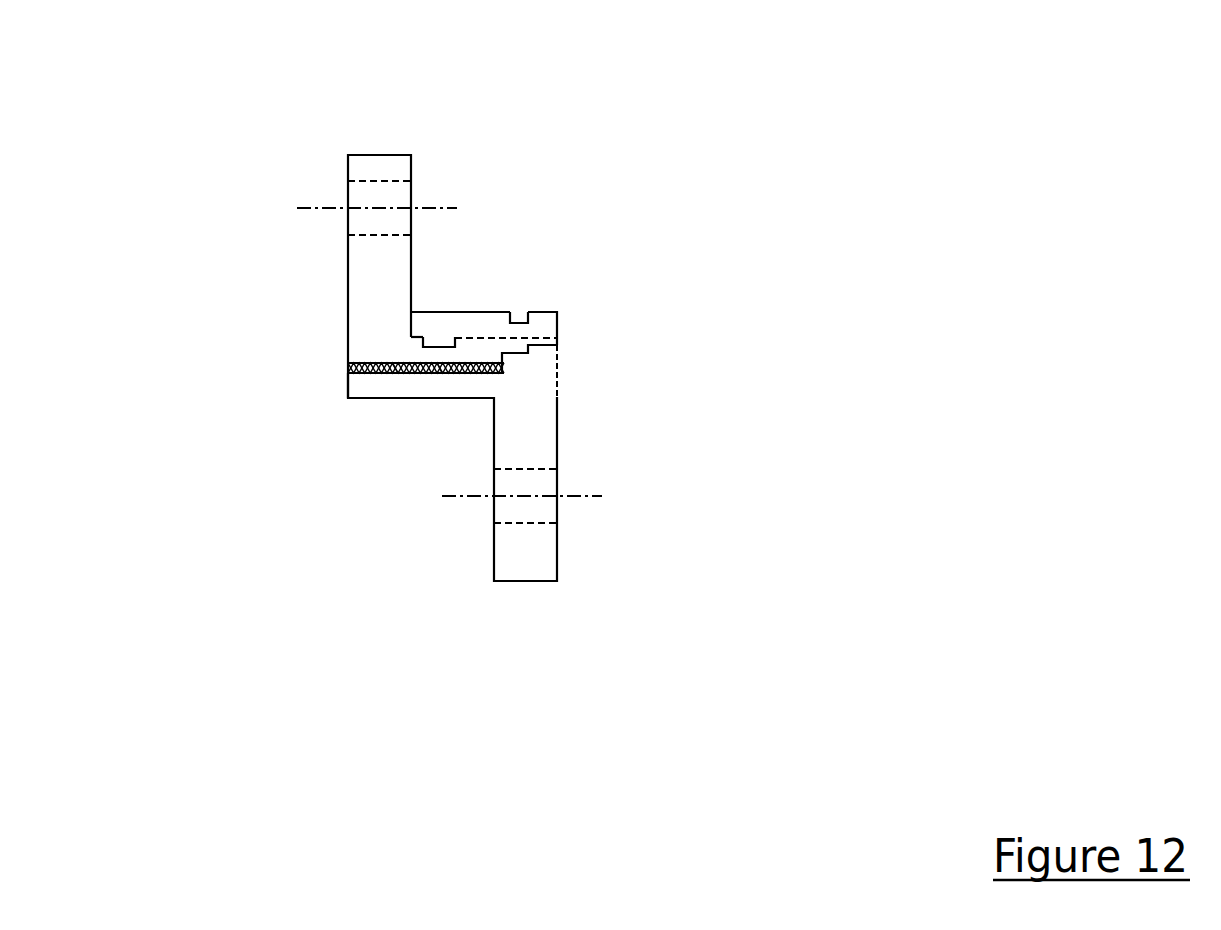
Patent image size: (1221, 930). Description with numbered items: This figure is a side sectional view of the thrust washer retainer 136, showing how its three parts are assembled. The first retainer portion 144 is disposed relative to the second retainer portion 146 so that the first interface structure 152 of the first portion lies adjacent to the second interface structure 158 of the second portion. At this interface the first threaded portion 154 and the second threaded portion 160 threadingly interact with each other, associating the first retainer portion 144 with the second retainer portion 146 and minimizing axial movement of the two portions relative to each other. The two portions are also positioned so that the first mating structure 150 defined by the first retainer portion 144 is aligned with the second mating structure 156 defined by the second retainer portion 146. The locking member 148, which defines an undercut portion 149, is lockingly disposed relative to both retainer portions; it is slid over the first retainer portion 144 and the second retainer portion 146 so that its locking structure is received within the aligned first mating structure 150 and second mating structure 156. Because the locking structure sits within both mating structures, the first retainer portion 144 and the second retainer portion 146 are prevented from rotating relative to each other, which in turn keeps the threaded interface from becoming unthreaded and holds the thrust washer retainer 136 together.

The thrust washer retainer 136 is at (923, 73).
The first retainer portion 144 is at (377, 207).
The second retainer portion 146 is at (522, 534).
The locking member 148 is at (544, 277).
The undercut portion 149 is at (552, 249).
The first mating structure 150 is at (472, 273).
The first interface structure 152 is at (353, 340).
The first threaded portion 154 is at (363, 413).
The second mating structure 156 is at (595, 379).
The second interface structure 158 is at (349, 425).
The second threaded portion 160 is at (412, 433).